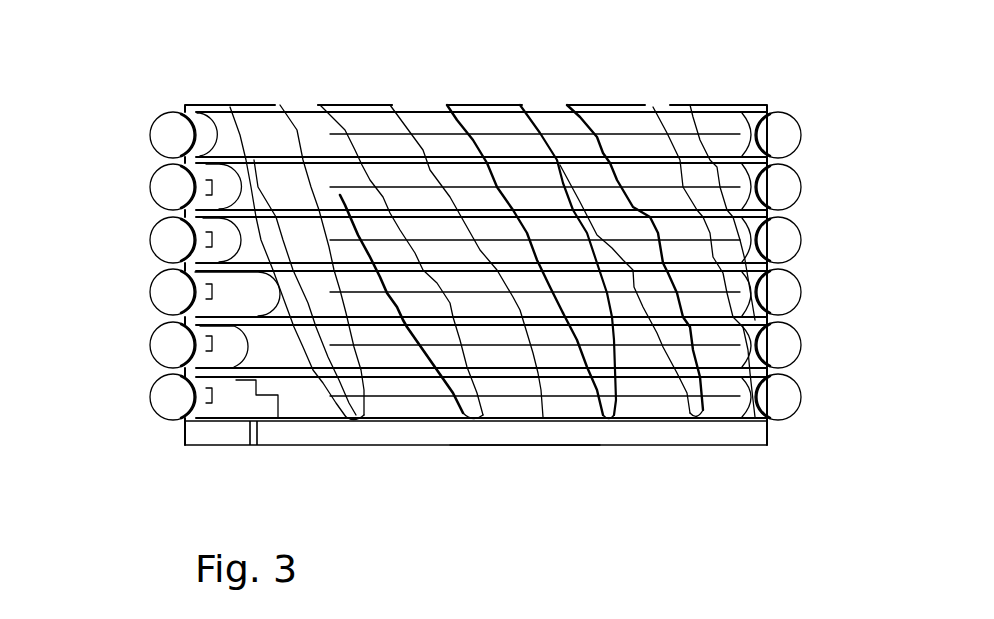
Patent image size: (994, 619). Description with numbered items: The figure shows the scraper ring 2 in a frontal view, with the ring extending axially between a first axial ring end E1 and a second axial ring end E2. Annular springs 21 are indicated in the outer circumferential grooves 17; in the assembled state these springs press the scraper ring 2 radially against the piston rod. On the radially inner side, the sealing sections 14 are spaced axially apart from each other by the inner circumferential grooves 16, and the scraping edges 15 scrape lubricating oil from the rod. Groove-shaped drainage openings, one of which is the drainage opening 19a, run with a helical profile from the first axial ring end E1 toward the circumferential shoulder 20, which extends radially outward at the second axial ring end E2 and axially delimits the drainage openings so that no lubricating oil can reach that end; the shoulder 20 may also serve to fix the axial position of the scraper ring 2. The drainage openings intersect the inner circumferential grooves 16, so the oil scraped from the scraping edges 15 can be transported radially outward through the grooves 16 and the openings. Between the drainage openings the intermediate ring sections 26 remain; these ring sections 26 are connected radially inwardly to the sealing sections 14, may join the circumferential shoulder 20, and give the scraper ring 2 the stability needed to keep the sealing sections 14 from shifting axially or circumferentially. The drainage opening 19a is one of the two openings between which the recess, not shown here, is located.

The scraper ring 2 is at (130, 58).
The sealing sections 14 is at (468, 175).
The scraping edges 15 is at (593, 185).
The inner circumferential grooves 16 is at (573, 355).
The outer circumferential grooves 17 is at (657, 192).
The drainage opening 19a is at (403, 103).
The circumferential shoulder 20 is at (212, 428).
The annular springs 21 is at (167, 188).
The ring sections 26 is at (382, 342).
The first axial ring end E1 is at (492, 100).
The second axial ring end E2 is at (528, 458).